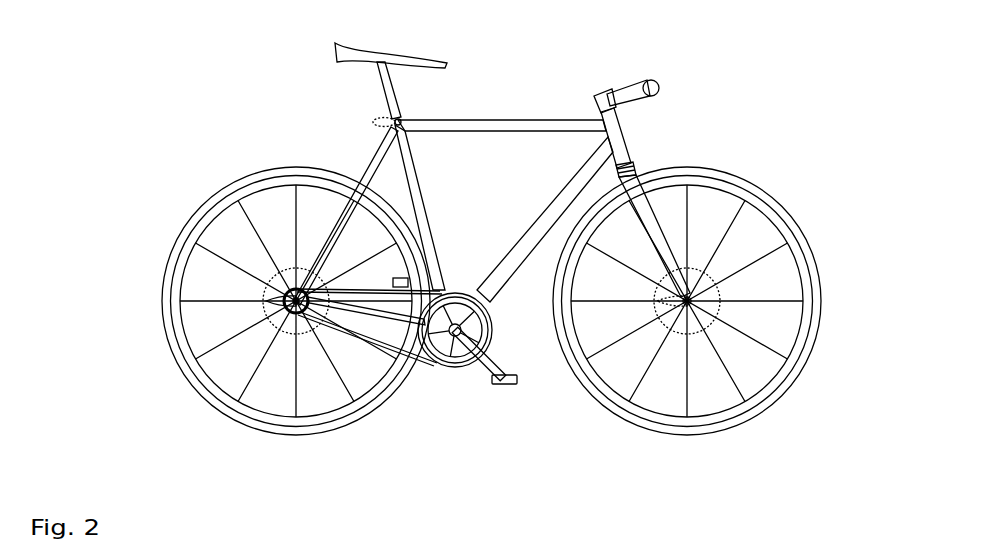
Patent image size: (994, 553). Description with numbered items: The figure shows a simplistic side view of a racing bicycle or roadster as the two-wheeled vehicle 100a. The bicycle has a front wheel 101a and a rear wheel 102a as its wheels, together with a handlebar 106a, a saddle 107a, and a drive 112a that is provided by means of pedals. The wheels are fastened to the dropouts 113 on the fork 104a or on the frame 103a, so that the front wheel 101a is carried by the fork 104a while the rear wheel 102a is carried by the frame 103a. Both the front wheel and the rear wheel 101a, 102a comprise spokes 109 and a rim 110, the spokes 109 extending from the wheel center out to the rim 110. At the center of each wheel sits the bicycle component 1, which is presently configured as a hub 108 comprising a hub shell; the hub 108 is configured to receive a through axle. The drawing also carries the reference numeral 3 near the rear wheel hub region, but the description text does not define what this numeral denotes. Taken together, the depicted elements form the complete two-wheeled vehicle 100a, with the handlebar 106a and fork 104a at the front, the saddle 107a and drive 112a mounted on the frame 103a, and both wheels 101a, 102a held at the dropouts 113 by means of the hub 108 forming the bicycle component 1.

The two-wheeled vehicle 100a is at (202, 82).
The front wheel 101a is at (792, 218).
The rear wheel 102a is at (193, 222).
The frame 103a is at (510, 120).
The fork 104a is at (648, 212).
The handlebar 106a is at (630, 85).
The saddle 107a is at (376, 48).
The hub 108 is at (700, 300).
The spokes 109 is at (788, 303).
The rim 110 is at (797, 340).
The drive 112a is at (473, 272).
The dropouts 113 is at (694, 282).
The rear hub drive device 3 is at (290, 297).
The bicycle component 1 is at (681, 320).